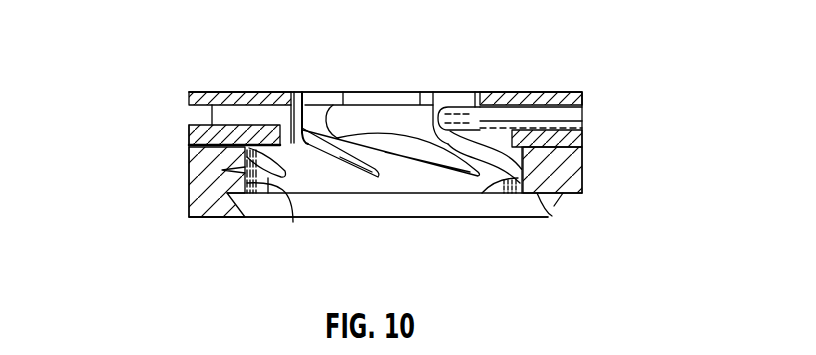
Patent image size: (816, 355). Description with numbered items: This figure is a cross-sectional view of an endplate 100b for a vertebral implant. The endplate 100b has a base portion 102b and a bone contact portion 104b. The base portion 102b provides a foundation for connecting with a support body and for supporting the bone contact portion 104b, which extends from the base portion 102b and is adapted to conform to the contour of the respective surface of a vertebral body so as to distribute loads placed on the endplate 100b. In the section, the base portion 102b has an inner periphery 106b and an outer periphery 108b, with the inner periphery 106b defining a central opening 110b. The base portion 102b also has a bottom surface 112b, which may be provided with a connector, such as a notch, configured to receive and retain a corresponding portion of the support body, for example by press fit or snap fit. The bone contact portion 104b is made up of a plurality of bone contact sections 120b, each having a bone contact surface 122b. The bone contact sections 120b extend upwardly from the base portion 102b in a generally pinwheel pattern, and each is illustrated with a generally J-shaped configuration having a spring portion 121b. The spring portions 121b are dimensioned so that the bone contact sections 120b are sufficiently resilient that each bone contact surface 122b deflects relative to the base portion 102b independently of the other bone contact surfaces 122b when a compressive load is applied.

The endplate 100b is at (192, 42).
The base portion 102b is at (594, 181).
The bone contact portion 104b is at (594, 98).
The inner periphery 106b is at (293, 222).
The outer periphery 108b is at (189, 153).
The central opening 110b is at (482, 193).
The bottom surface 112b is at (552, 216).
The bone contact sections 120b is at (189, 93).
The spring portion 121b is at (395, 135).
The bone contact surface 122b is at (462, 92).